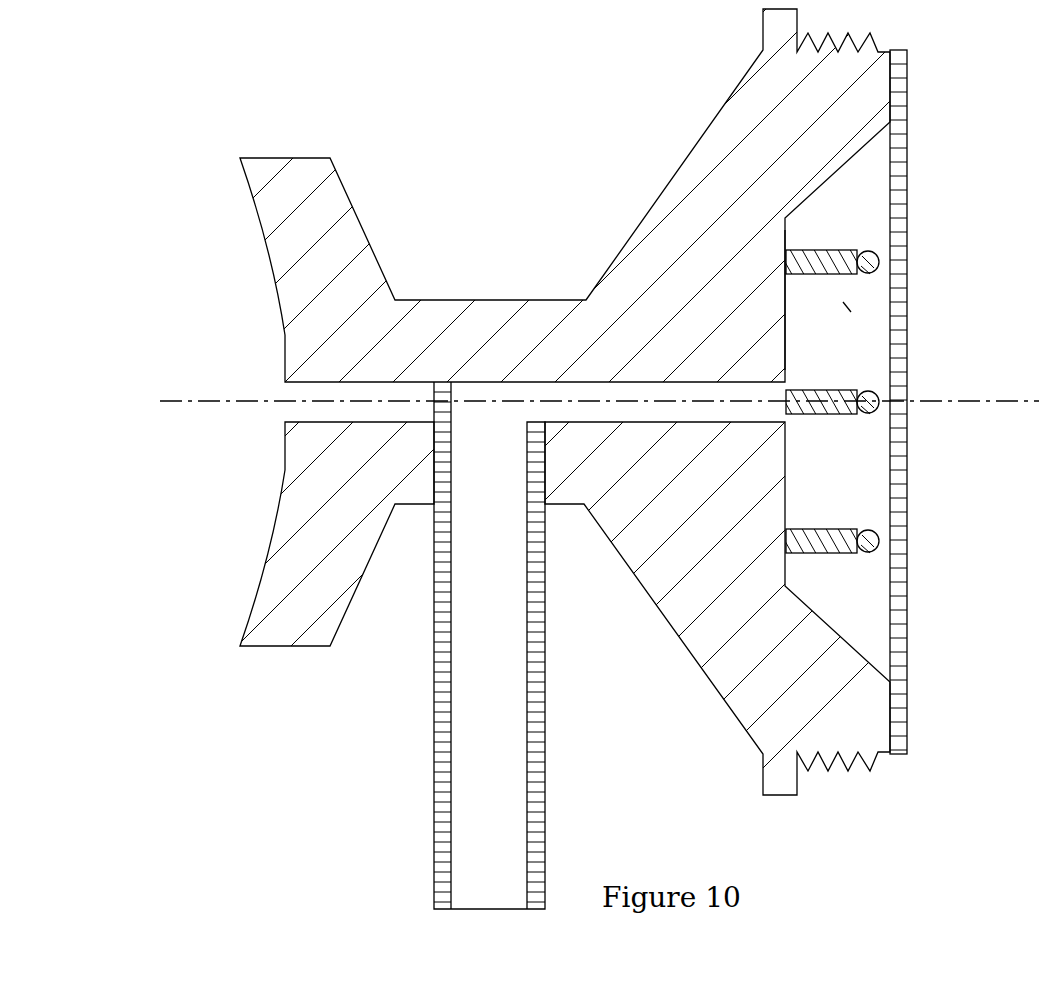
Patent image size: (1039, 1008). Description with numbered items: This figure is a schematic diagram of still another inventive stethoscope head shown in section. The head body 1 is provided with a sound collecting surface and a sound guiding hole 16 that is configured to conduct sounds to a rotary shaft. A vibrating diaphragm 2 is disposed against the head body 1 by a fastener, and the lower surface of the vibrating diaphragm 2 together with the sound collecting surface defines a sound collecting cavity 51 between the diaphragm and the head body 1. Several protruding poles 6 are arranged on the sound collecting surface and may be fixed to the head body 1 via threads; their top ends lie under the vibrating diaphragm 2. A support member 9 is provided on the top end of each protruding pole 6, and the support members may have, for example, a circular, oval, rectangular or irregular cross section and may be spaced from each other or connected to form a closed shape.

The head body 1 is at (752, 174).
The sound collecting cavity 51 is at (835, 325).
The sound guiding hole 16 is at (560, 393).
The vibrating diaphragm 2 is at (901, 541).
The protruding pole 6 is at (824, 248).
The support member 9 is at (879, 256).